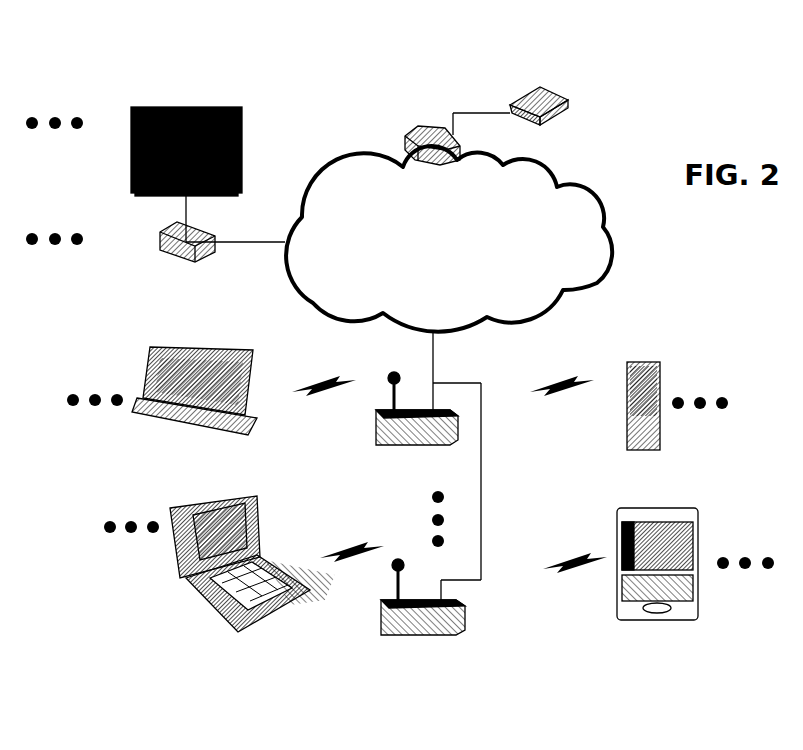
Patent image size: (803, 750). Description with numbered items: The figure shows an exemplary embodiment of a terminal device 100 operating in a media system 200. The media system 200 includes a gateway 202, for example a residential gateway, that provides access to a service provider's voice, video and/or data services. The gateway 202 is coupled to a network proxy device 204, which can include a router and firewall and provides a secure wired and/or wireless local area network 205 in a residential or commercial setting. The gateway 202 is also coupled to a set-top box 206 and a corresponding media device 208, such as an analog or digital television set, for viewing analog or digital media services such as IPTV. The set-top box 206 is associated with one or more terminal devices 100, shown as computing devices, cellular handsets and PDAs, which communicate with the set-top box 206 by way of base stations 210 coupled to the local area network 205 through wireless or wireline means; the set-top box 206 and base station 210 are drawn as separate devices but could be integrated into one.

The terminal device 100 is at (197, 360).
The media system 200 is at (708, 144).
The gateway 202 is at (516, 92).
The network proxy device 204 is at (400, 128).
The local area network 205 is at (566, 270).
The set-top box 206 is at (150, 232).
The media device 208 is at (195, 107).
The base station 210 is at (462, 630).